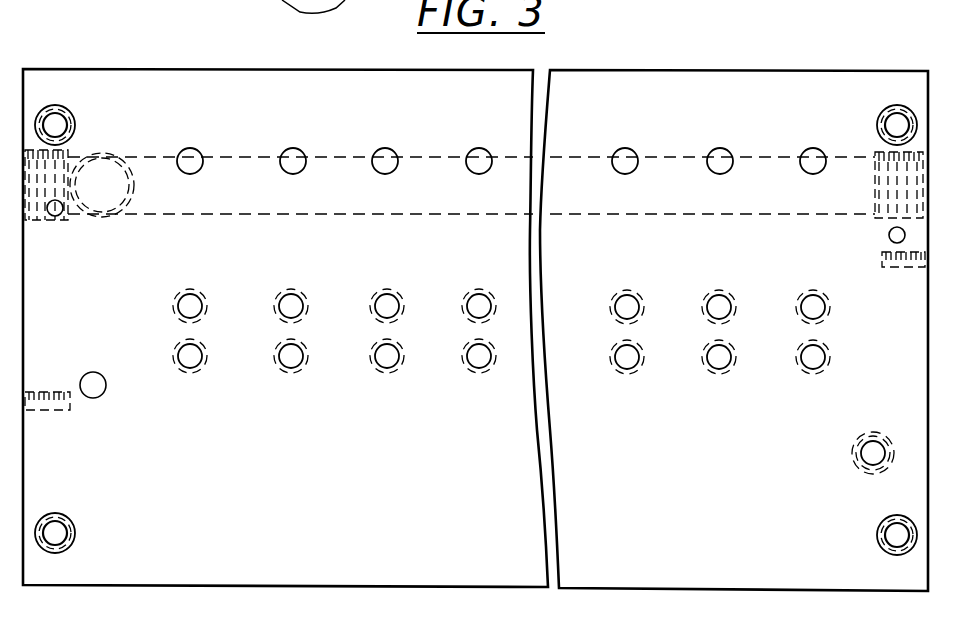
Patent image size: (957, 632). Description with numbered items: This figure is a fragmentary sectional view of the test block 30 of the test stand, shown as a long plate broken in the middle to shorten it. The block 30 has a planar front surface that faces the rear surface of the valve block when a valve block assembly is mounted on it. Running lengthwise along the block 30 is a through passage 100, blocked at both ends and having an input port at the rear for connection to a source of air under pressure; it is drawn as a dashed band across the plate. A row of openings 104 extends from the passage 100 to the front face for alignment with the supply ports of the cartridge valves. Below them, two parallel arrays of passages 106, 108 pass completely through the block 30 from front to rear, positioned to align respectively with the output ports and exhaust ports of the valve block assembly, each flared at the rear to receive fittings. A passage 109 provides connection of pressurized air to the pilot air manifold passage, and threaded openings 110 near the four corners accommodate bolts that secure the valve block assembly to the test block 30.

The test block 30 is at (692, 63).
The through passage 100 is at (352, 160).
The openings 104 is at (193, 165).
The passages 106 is at (284, 301).
The passages 108 is at (284, 363).
The passage 109 is at (866, 453).
The threaded openings 110 is at (60, 126).